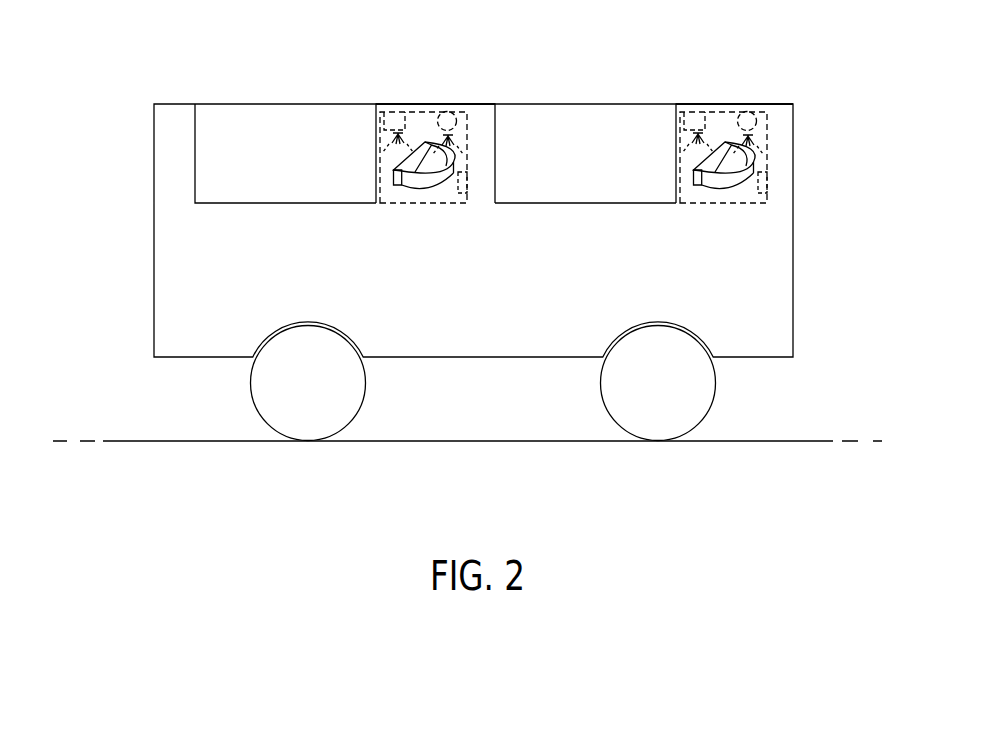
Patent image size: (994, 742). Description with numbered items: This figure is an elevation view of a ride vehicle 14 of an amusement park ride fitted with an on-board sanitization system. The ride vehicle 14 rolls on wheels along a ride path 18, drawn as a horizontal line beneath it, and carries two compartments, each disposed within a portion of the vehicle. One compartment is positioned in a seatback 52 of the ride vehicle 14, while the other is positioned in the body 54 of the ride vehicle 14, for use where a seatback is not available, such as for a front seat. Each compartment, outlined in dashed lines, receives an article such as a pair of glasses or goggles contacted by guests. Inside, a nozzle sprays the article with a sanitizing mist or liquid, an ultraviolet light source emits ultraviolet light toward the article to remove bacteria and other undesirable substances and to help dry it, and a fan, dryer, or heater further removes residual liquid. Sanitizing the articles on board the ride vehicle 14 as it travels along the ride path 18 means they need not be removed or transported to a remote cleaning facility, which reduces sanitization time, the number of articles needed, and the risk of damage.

The ride vehicle 14 is at (266, 47).
The ride path 18 is at (228, 441).
The seatback 52 is at (434, 104).
The body 54 is at (734, 72).